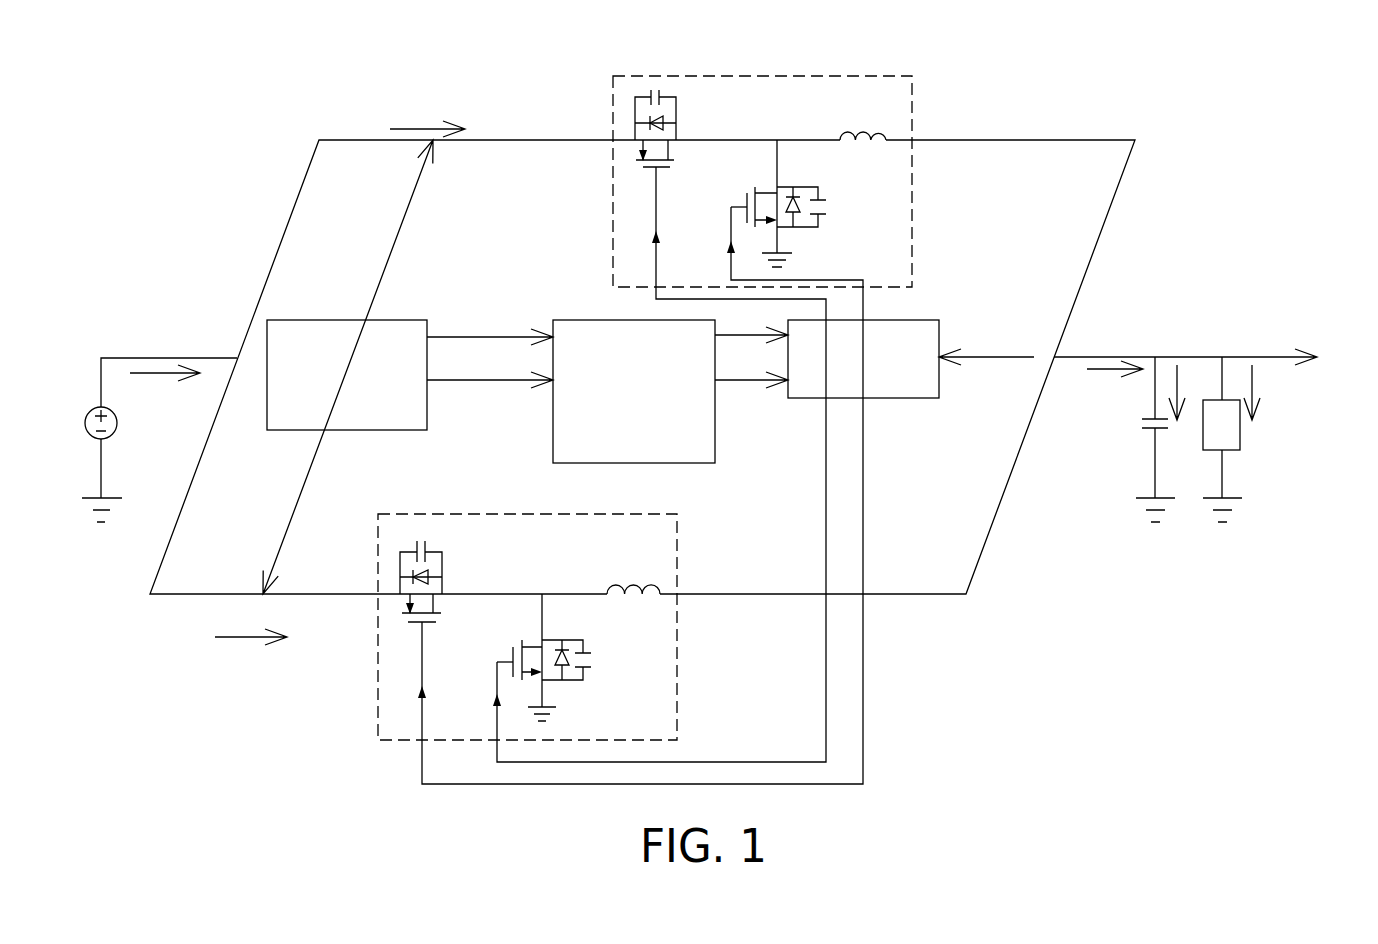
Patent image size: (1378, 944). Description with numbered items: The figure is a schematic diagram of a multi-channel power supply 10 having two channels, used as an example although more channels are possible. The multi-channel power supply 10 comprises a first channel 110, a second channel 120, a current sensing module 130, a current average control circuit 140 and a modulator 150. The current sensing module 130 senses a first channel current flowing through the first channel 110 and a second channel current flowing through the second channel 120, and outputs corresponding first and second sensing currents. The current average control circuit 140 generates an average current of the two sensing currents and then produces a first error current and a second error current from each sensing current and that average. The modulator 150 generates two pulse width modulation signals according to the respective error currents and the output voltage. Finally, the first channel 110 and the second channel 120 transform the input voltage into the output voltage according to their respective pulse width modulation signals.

The multi-channel power supply 10 is at (74, 63).
The first channel 110 is at (378, 703).
The second channel 120 is at (912, 111).
The current sensing module 130 is at (380, 430).
The current average control circuit 140 is at (575, 320).
The modulator 150 is at (800, 398).